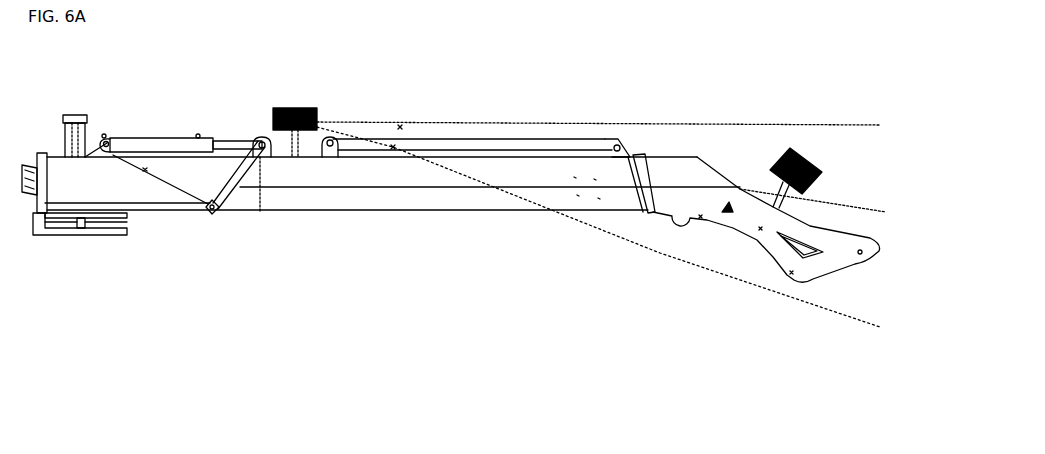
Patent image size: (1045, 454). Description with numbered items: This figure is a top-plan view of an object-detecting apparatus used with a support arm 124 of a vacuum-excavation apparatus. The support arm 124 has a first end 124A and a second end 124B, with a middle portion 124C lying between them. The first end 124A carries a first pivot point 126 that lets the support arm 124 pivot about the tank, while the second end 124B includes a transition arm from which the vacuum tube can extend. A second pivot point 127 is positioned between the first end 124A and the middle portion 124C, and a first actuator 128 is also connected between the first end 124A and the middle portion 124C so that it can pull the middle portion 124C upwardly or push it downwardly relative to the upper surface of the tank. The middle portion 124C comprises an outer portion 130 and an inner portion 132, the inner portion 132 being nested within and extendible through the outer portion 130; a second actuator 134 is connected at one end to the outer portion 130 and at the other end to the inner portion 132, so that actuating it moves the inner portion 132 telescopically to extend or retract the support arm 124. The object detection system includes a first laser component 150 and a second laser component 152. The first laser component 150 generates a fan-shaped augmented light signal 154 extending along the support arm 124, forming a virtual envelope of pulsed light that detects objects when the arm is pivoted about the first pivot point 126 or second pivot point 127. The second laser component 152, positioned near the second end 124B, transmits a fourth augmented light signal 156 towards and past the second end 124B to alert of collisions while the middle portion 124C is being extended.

The support arm 124 is at (338, 55).
The first end 124A is at (97, 127).
The second end 124B is at (819, 223).
The middle portion 124C is at (388, 216).
The first pivot point 126 is at (128, 224).
The second pivot point 127 is at (218, 213).
The first actuator 128 is at (174, 138).
The outer portion 130 is at (538, 213).
The inner portion 132 is at (647, 212).
The second actuator 134 is at (560, 140).
The first laser component 150 is at (306, 108).
The second laser component 152 is at (777, 162).
The augmented light signal 154 is at (471, 120).
The fourth augmented light signal 156 is at (877, 208).